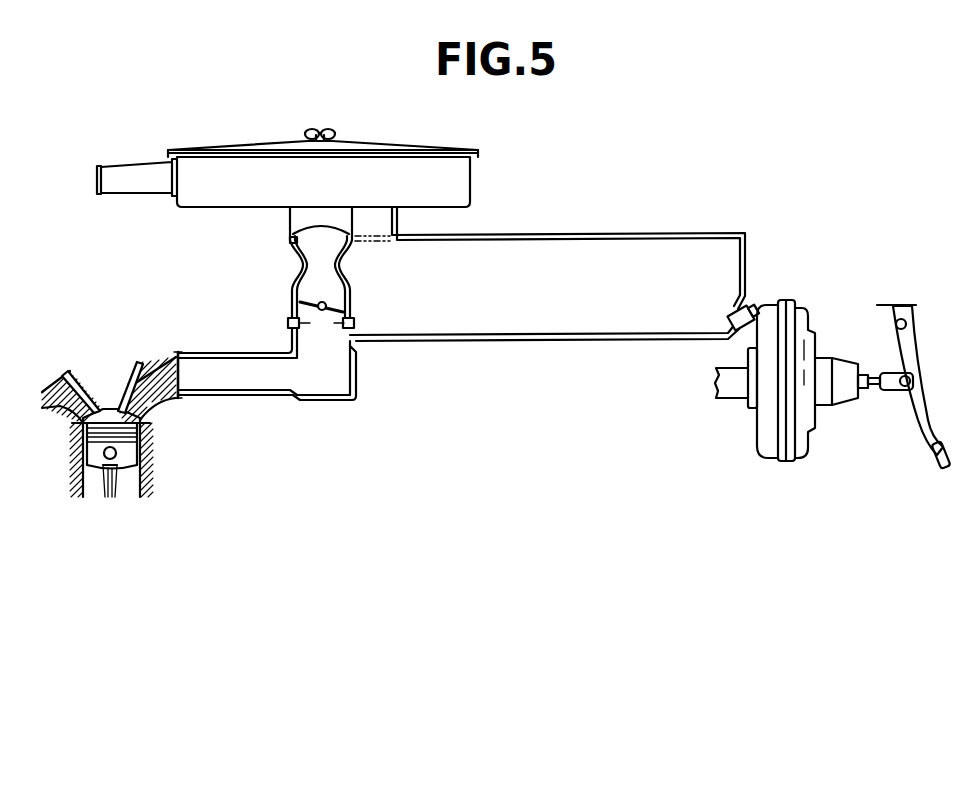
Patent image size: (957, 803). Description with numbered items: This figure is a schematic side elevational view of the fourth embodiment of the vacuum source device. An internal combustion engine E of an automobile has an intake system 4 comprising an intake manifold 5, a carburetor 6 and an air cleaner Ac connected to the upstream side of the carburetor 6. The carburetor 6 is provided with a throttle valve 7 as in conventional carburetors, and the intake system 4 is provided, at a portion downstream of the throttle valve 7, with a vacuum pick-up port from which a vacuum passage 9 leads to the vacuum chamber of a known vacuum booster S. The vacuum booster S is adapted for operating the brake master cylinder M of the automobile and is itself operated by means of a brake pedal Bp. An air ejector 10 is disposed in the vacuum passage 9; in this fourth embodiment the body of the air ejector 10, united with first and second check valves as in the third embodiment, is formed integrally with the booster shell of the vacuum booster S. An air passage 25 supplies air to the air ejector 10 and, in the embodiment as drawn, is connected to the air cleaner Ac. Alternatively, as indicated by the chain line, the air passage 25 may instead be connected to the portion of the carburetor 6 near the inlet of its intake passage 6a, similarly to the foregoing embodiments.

The intake system 4 is at (240, 397).
The intake manifold 5 is at (230, 353).
The carburetor 6 is at (340, 289).
The intake passage 6a is at (290, 240).
The throttle valve 7 is at (333, 311).
The vacuum passage 9 is at (484, 342).
The air ejector 10 is at (737, 312).
The air passage 25 is at (544, 235).
The air cleaner Ac is at (333, 193).
The internal combustion engine E is at (109, 376).
The vacuum booster S is at (806, 292).
The master cylinder M is at (716, 390).
The brake pedal Bp is at (937, 461).